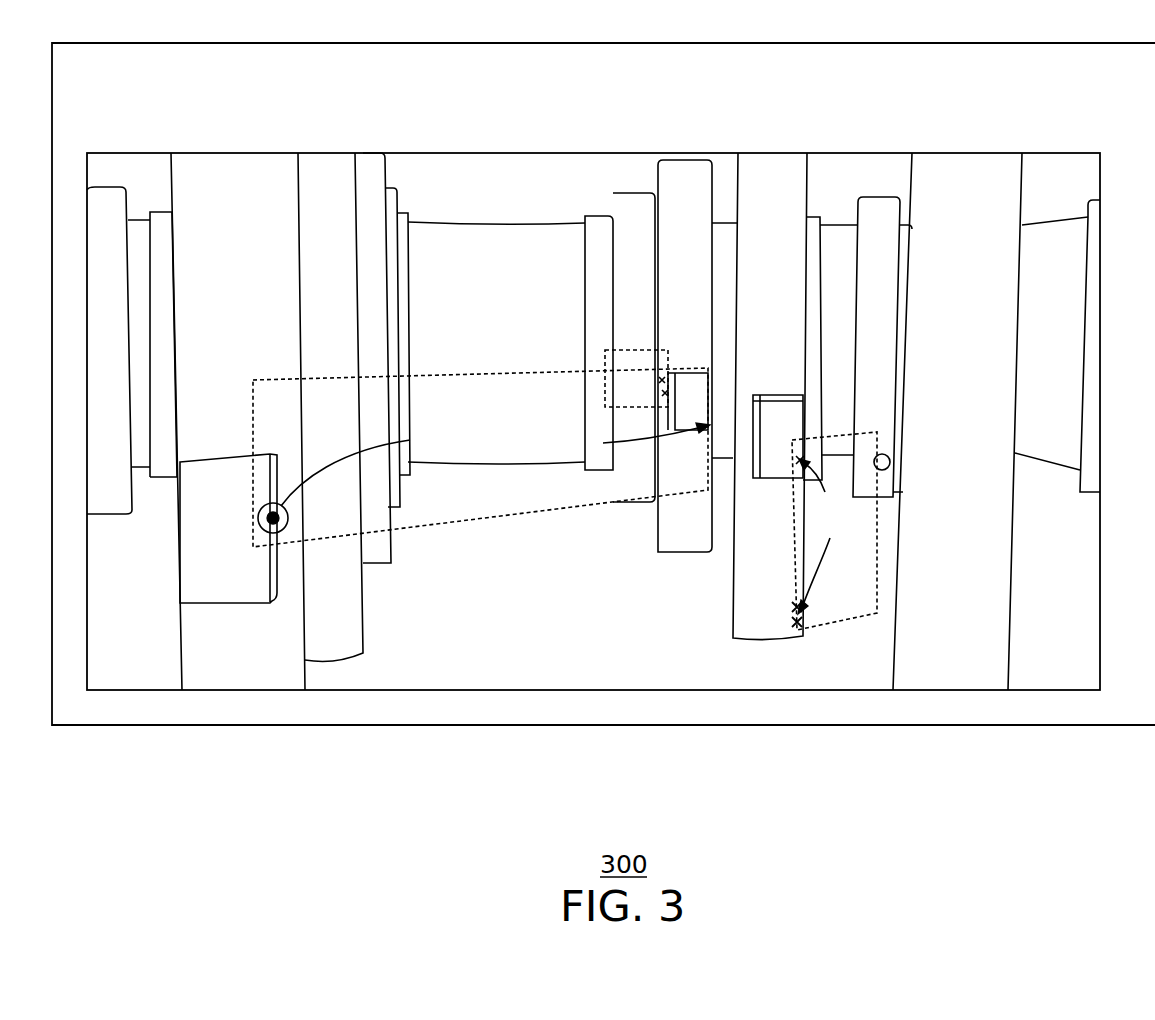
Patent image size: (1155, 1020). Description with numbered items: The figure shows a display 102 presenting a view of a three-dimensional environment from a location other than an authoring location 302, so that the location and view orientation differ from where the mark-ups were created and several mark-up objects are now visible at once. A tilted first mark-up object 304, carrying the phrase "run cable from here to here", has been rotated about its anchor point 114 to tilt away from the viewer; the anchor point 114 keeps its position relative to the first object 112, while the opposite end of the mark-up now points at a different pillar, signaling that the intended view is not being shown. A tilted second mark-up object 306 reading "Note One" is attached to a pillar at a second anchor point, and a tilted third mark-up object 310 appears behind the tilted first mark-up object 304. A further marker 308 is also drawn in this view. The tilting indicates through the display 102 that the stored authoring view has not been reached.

The display 102 is at (1012, 43).
The location other than an authoring location 302 is at (232, 152).
The tilted first mark-up object 304 is at (476, 522).
The tilted second mark-up object 306 is at (862, 537).
The marker 308 is at (800, 630).
The tilted third mark-up object 310 is at (627, 348).
The first object 112 is at (205, 537).
The anchor point 114 is at (267, 536).